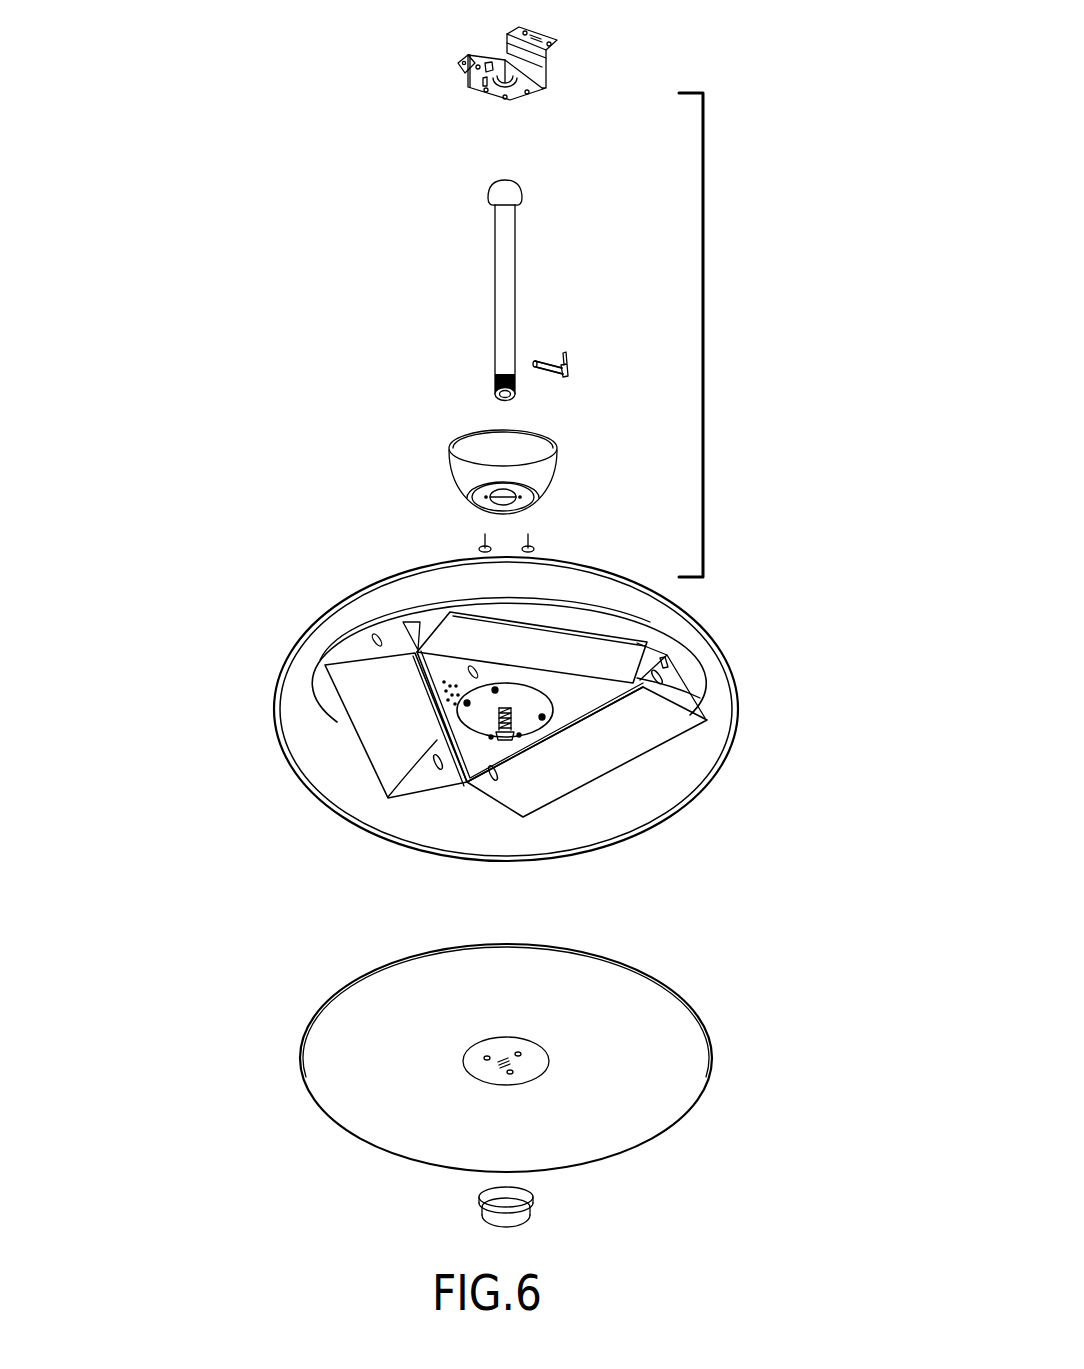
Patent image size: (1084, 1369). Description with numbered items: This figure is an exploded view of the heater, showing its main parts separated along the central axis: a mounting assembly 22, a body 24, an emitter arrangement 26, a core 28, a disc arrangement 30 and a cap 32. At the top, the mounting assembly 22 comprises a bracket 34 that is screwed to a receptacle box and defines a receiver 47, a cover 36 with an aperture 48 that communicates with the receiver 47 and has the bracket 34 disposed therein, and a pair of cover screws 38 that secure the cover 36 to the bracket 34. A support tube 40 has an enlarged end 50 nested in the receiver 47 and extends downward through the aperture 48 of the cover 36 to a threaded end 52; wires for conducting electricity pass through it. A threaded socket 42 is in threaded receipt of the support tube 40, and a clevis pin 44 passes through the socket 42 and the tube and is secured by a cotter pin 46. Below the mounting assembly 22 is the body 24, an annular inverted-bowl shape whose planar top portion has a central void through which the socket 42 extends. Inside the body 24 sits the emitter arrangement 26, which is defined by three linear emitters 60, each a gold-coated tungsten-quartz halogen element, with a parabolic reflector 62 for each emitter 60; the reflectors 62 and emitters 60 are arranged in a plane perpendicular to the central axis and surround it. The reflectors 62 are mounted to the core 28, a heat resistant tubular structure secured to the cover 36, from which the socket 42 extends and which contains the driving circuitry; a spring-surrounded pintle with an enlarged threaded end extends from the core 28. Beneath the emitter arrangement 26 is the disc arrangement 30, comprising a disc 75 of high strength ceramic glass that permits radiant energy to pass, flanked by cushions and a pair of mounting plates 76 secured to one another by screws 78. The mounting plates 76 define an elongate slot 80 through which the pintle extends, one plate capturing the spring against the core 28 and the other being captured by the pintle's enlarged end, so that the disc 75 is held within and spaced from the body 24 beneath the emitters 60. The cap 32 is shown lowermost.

The mounting assembly 22 is at (712, 335).
The body 24 is at (499, 884).
The emitter arrangement 26 is at (667, 770).
The core 28 is at (548, 745).
The disc arrangement 30 is at (579, 1066).
The cap 32 is at (547, 1212).
The bracket 34 is at (530, 65).
The cover 36 is at (550, 470).
The cover screws 38 is at (485, 535).
The support tube 40 is at (512, 260).
The socket 42 is at (563, 557).
The clevis pin 44 is at (548, 353).
The cotter pin 46 is at (558, 375).
The receiver 47 is at (489, 102).
The aperture 48 is at (496, 480).
The enlarged end 50 is at (523, 176).
The threaded end 52 is at (492, 382).
The linear emitters 60 is at (424, 701).
The parabolic reflector 62 is at (447, 635).
The disc 75 is at (667, 1113).
The mounting plates 76 is at (550, 1062).
The screws 78 is at (487, 1056).
The elongate slot 80 is at (491, 1076).